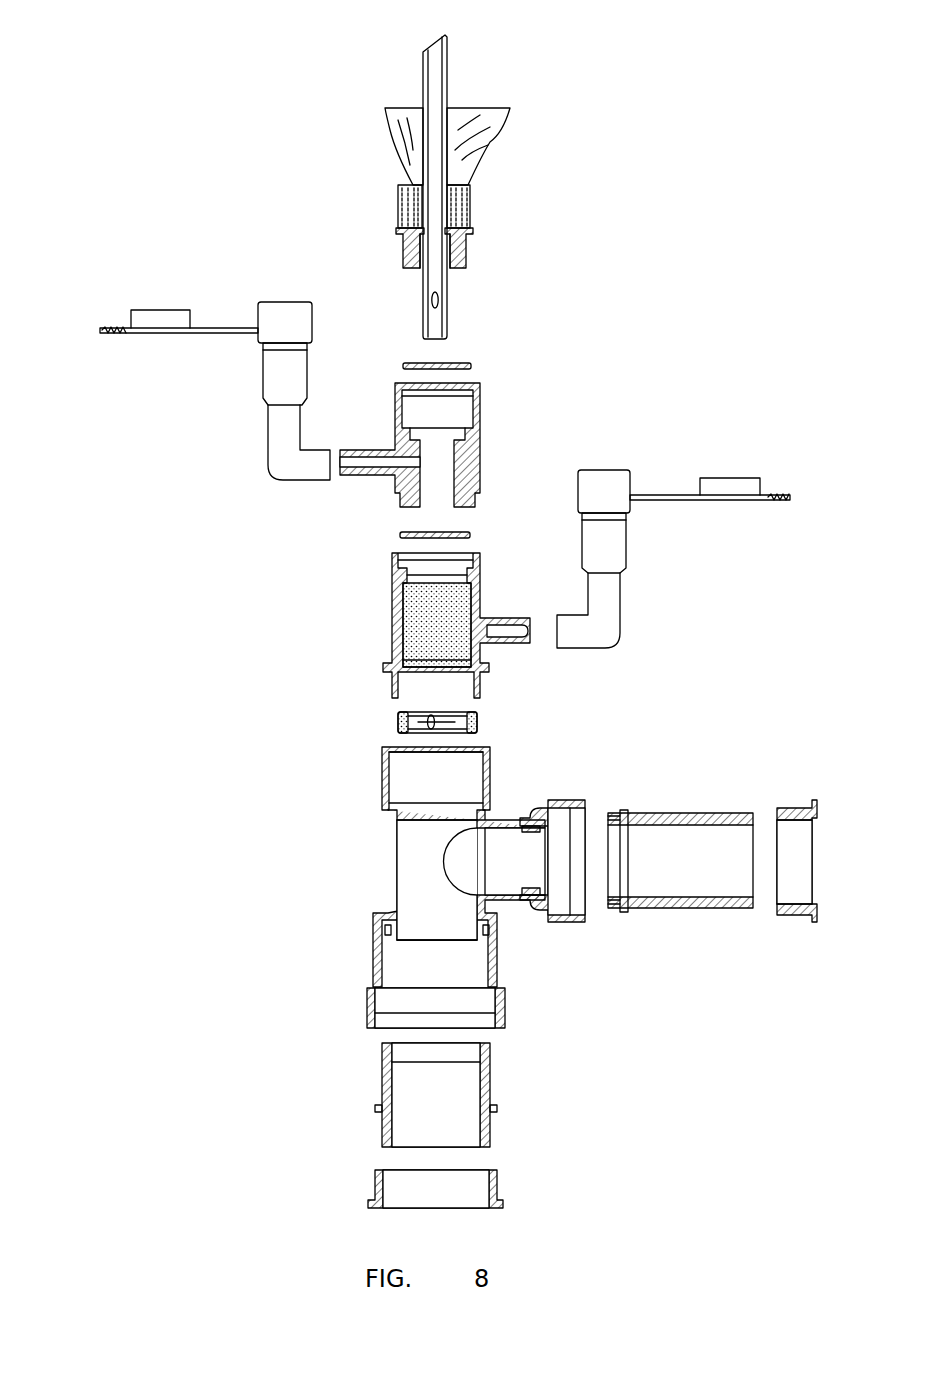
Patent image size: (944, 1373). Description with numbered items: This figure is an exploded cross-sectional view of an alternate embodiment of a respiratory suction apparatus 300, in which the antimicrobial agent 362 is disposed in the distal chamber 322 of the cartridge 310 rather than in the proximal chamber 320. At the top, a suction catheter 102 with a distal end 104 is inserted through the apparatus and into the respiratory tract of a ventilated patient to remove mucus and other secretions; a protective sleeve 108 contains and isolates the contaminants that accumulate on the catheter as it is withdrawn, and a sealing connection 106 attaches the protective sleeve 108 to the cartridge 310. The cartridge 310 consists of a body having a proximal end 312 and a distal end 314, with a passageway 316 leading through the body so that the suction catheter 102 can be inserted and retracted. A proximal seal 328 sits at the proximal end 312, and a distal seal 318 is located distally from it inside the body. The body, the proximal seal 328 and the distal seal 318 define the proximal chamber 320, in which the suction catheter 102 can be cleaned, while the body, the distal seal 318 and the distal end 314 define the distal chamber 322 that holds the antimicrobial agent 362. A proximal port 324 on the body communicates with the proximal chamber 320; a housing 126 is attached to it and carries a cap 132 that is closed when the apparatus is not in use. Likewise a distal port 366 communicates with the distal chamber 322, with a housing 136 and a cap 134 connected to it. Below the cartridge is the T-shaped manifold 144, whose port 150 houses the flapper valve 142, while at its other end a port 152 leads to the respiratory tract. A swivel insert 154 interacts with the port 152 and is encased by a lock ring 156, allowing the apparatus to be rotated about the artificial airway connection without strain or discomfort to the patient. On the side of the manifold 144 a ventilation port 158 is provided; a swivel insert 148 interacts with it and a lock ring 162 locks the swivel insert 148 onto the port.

The respiratory suction apparatus 300 is at (180, 220).
The cartridge 310 is at (264, 611).
The suction catheter 102 is at (423, 58).
The distal end 104 is at (425, 320).
The sealing connection 106 is at (470, 233).
The protective sleeve 108 is at (503, 127).
The proximal seal 328 is at (480, 362).
The proximal end 312 is at (481, 405).
The passageway 316 is at (444, 472).
The proximal chamber 320 is at (432, 488).
The proximal port 324 is at (372, 473).
The distal seal 318 is at (400, 537).
The distal end 314 is at (397, 652).
The distal chamber 322 is at (412, 603).
The distal port 366 is at (515, 646).
The antimicrobial agent 362 is at (452, 664).
The flapper valve 142 is at (398, 724).
The port 150 is at (390, 769).
The T-shaped manifold 144 is at (392, 842).
The port 152 is at (375, 997).
The ventilation port 158 is at (503, 898).
The swivel insert 148 is at (697, 823).
The lock ring 162 is at (792, 912).
The swivel insert 154 is at (390, 1077).
The lock ring 156 is at (385, 1185).
The housing 126 is at (270, 390).
The cap 132 is at (162, 330).
The housing 136 is at (618, 555).
The cap 134 is at (730, 478).